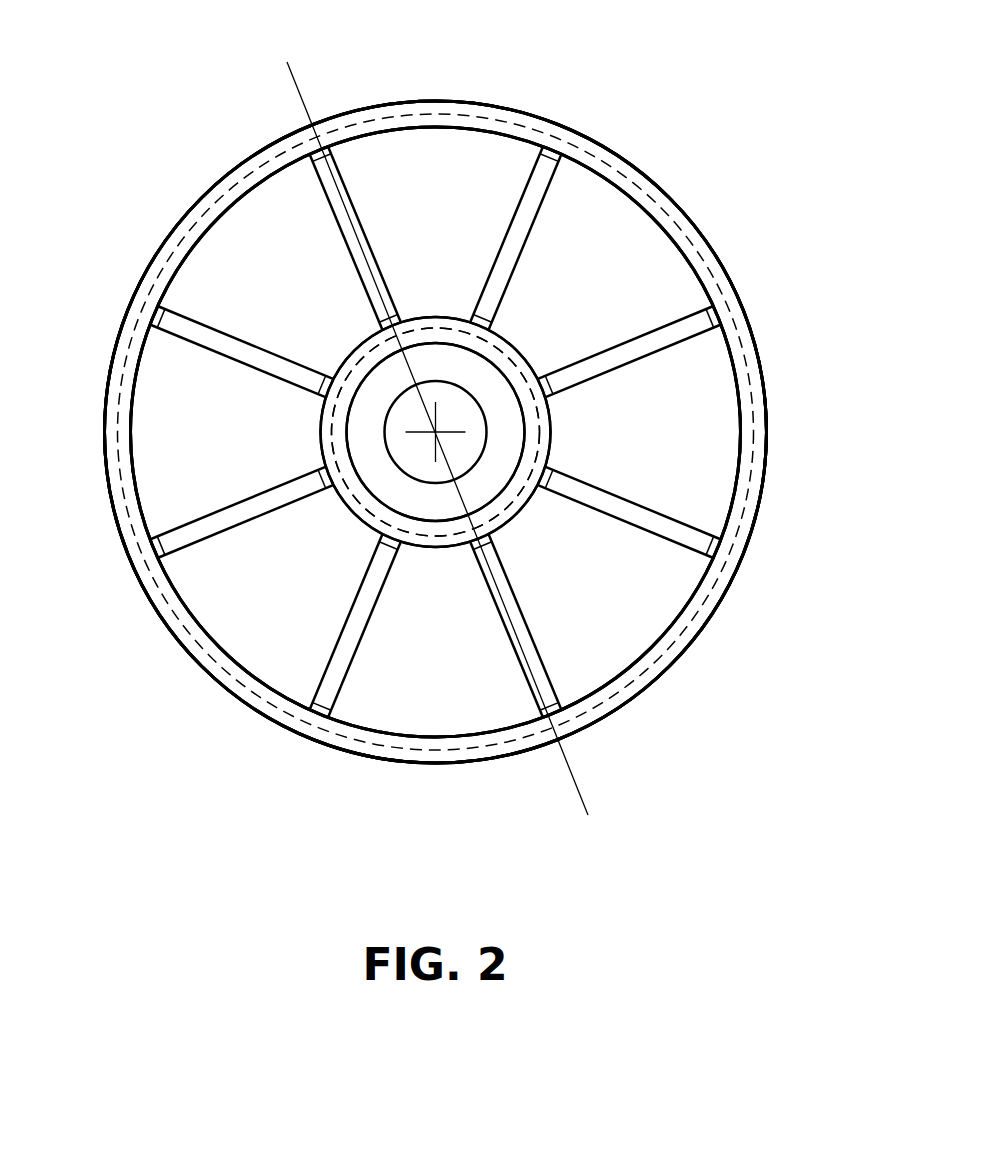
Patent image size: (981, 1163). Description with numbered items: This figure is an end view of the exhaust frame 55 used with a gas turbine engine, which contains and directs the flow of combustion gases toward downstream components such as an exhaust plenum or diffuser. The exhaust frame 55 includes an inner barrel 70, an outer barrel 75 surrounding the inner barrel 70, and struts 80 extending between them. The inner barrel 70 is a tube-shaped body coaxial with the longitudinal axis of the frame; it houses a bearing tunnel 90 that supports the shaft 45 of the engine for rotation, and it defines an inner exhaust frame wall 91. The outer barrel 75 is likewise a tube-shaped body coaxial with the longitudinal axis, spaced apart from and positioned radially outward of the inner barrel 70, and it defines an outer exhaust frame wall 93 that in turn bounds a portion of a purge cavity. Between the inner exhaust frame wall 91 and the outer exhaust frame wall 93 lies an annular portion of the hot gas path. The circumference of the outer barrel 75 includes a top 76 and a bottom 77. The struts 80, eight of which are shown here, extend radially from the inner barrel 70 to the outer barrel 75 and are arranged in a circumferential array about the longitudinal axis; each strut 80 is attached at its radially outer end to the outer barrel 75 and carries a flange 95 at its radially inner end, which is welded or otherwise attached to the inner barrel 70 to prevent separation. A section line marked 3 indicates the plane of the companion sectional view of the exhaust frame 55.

The exhaust frame 55 is at (198, 128).
The outer barrel 75 is at (188, 207).
The top 76 is at (440, 100).
The bottom 77 is at (445, 763).
The outer exhaust frame wall 93 is at (432, 127).
The struts 80 is at (510, 232).
The inner barrel 70 is at (332, 437).
The flange 95 is at (495, 327).
The inner exhaust frame wall 91 is at (418, 315).
The bearing tunnel 90 is at (500, 453).
The shaft 45 is at (470, 397).
The section line 3- 3 is at (287, 62).